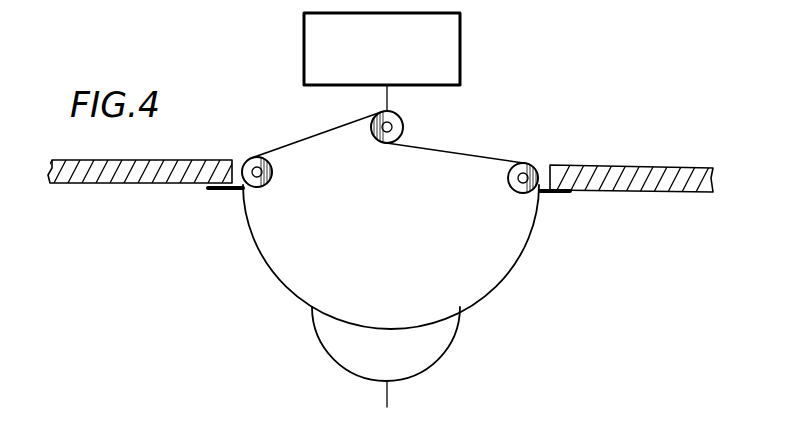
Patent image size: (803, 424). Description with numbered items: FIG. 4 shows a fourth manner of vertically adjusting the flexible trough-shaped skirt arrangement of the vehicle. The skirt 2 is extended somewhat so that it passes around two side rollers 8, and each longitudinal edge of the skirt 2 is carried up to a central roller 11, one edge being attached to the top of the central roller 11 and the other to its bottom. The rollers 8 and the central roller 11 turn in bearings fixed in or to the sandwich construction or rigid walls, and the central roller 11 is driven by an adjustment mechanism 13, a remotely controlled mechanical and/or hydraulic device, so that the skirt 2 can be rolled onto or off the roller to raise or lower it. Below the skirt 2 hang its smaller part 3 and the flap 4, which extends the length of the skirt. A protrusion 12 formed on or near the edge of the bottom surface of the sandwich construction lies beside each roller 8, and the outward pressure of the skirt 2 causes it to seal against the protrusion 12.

The flexible trough-shaped skirt 2 is at (512, 268).
The smaller part 3 is at (452, 345).
The flap 4 is at (389, 398).
The rollers 8 is at (273, 178).
The central roller 11 is at (404, 131).
The protrusion 12 is at (215, 192).
The adjustment mechanism 13 is at (382, 62).